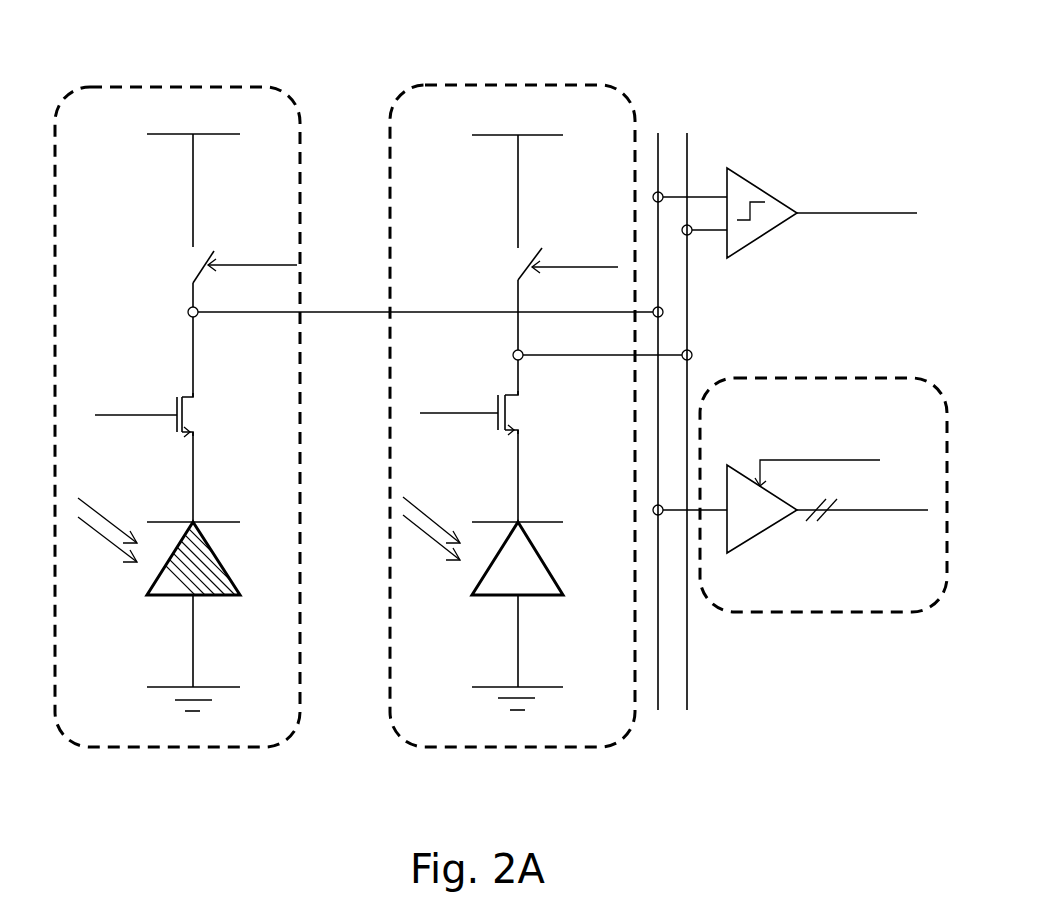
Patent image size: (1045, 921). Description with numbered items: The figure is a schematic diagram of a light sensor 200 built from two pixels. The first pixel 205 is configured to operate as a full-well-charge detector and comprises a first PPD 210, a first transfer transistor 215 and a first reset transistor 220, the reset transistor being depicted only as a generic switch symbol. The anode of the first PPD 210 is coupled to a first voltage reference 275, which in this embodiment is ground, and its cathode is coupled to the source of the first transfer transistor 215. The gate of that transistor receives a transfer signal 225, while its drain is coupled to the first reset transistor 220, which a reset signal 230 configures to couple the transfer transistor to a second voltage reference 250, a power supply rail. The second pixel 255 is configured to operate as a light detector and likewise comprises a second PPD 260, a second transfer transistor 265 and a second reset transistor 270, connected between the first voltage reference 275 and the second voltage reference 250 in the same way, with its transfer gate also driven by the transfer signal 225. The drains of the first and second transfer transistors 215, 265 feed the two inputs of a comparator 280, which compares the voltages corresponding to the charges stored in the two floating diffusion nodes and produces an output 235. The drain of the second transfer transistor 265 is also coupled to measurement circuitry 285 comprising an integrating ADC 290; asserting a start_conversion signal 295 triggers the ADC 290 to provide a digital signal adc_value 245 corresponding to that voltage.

The light sensor 200 is at (780, 82).
The first pixel 205 is at (505, 86).
The first PPD 210 is at (535, 596).
The first transfer transistor 215 is at (522, 418).
The first reset transistor 220 is at (532, 253).
The transfer signal 225 is at (158, 405).
The reset signal 230 is at (278, 263).
The output 235 is at (820, 216).
The adc_value 245 is at (908, 517).
The second voltage reference 250 is at (553, 133).
The second pixel 255 is at (180, 84).
The second PPD 260 is at (165, 603).
The second transfer transistor 265 is at (193, 418).
The second reset transistor 270 is at (197, 267).
The first voltage reference 275 is at (230, 693).
The comparator 280 is at (782, 195).
The measurement circuitry 285 is at (885, 613).
The integrating Analog-to-Digital Converter (ADC) 290 is at (758, 540).
The start_conversion signal 295 is at (825, 435).